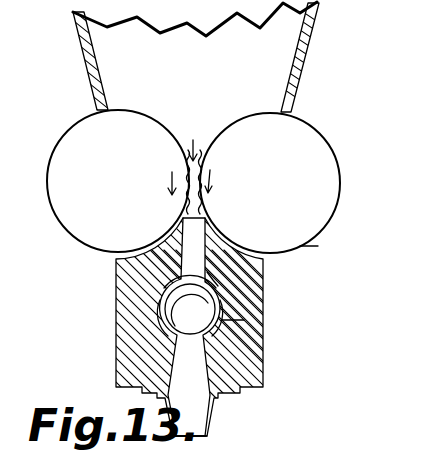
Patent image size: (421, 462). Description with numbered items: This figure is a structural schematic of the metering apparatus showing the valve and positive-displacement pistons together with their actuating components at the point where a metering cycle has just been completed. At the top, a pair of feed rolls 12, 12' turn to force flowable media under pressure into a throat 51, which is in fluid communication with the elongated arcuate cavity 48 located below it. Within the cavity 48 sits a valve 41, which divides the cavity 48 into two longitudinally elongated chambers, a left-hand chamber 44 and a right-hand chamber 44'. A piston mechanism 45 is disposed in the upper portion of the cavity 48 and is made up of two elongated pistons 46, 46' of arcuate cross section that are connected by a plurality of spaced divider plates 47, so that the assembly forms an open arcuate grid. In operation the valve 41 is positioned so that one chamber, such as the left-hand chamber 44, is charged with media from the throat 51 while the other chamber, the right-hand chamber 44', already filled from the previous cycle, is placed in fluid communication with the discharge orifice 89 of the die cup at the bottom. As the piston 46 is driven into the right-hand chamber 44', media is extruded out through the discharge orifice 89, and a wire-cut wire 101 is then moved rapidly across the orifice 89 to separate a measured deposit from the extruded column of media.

The feed roll 12 is at (118, 181).
The feed roll 12' is at (270, 183).
The valve 41 is at (264, 348).
The left-hand chamber 44 is at (104, 332).
The right-hand chamber 44' is at (268, 318).
The piston mechanism 45 is at (312, 241).
The piston 46 is at (126, 309).
The piston 46' is at (261, 289).
The divider plate 47 is at (130, 283).
The cavity 48 is at (244, 311).
The throat 51 is at (118, 261).
The discharge orifice 89 is at (209, 437).
The wire-cut wire 101 is at (221, 430).